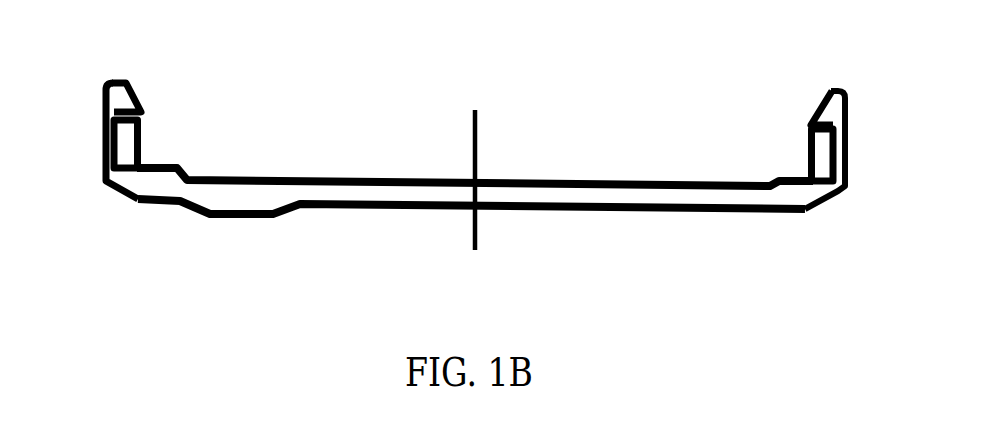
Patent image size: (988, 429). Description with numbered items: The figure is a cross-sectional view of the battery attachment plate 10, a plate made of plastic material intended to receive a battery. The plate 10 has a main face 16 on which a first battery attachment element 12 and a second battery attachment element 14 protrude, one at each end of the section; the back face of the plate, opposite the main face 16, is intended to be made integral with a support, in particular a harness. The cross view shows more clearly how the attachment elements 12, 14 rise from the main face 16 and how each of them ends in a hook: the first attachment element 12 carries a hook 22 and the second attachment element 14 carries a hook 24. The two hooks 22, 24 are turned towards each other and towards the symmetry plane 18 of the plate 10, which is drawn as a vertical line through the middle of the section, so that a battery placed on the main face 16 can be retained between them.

The battery attachment plate 10 is at (385, 221).
The first battery attachment element 12 is at (848, 147).
The second battery attachment element 14 is at (107, 157).
The main face 16 is at (506, 180).
The symmetry plane 18 is at (478, 128).
The hook 22 is at (827, 112).
The hook 24 is at (118, 102).